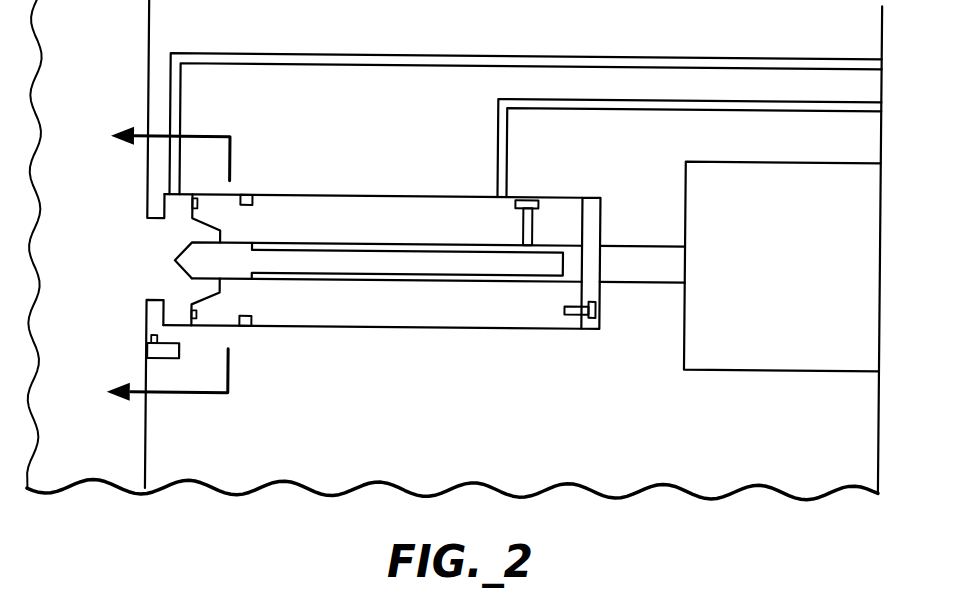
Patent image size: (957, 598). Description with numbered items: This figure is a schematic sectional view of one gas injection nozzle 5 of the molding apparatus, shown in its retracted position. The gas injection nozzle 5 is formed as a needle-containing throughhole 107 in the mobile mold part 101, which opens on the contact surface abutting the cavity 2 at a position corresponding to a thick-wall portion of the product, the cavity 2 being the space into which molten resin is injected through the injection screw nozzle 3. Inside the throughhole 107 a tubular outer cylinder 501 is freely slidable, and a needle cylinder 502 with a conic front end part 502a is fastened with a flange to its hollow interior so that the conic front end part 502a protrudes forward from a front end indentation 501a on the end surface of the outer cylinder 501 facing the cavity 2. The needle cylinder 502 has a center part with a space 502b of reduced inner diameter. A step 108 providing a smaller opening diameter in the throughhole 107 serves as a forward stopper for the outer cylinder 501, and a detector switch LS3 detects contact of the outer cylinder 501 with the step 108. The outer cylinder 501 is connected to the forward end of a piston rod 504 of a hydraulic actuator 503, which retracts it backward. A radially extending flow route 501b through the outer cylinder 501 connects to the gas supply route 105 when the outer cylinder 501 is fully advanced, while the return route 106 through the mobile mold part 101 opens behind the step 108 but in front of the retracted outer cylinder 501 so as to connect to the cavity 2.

The cavity 2 is at (123, 422).
The injection screw nozzle 3 is at (158, 266).
The gas injection nozzle 5 is at (124, 214).
The mobile mold part 101 is at (728, 474).
The gas supply route 105 is at (640, 93).
The return route 106 is at (408, 55).
The needle-containing throughhole 107 is at (443, 203).
The step 108 is at (150, 313).
The detector switch LS3 is at (147, 352).
The tubular outer cylinder 501 is at (292, 316).
The front end indentation 501a is at (207, 288).
The radially extending flow route 501b is at (537, 213).
The needle cylinder 502 is at (477, 260).
The conic front end part 502a is at (183, 248).
The space having a reduced inner diameter 502b is at (363, 275).
The hydraulic actuator 503 is at (763, 167).
The piston rod 504 is at (613, 268).